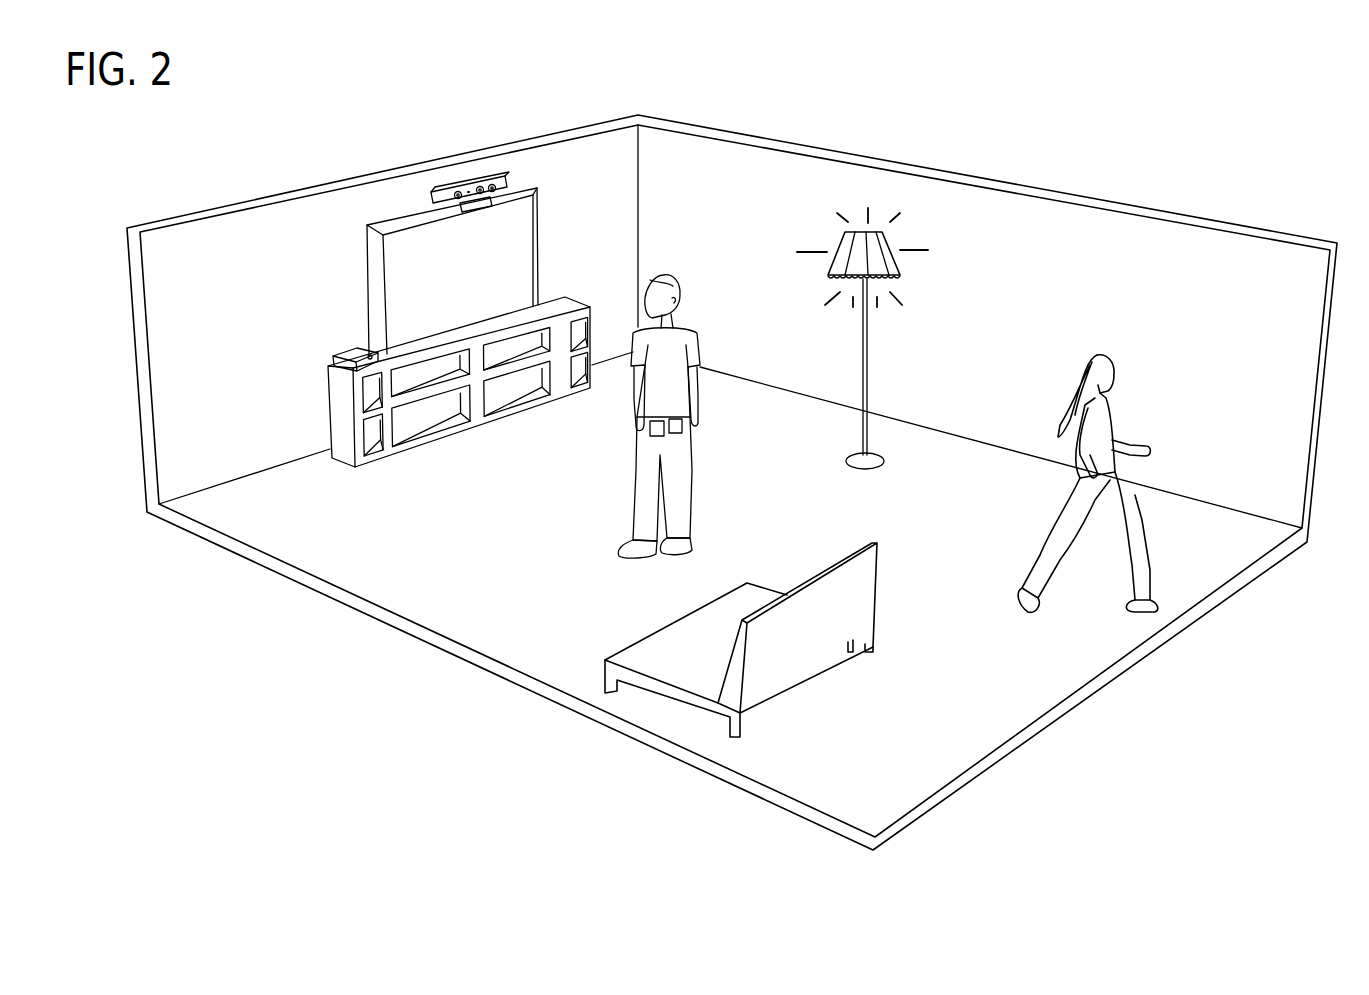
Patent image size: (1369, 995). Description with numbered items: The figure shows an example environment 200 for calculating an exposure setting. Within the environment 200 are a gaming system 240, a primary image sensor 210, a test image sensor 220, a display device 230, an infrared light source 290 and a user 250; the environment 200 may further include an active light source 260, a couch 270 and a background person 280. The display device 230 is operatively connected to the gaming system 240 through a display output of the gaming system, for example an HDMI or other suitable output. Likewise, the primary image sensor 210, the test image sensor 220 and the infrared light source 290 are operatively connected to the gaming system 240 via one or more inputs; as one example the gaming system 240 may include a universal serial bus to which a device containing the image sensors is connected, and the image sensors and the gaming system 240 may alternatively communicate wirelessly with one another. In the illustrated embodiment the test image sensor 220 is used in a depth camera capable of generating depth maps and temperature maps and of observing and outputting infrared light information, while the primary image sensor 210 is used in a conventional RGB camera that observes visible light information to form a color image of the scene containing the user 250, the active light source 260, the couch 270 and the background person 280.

The environment 200 is at (438, 76).
The primary image sensor 210 is at (481, 186).
The test image sensor 220 is at (497, 192).
The display device 230 is at (485, 282).
The gaming system 240 is at (333, 357).
The user 250 is at (633, 462).
The active light source 260 is at (842, 240).
The couch 270 is at (605, 660).
The background person 280 is at (1085, 362).
The infrared light source 290 is at (436, 203).